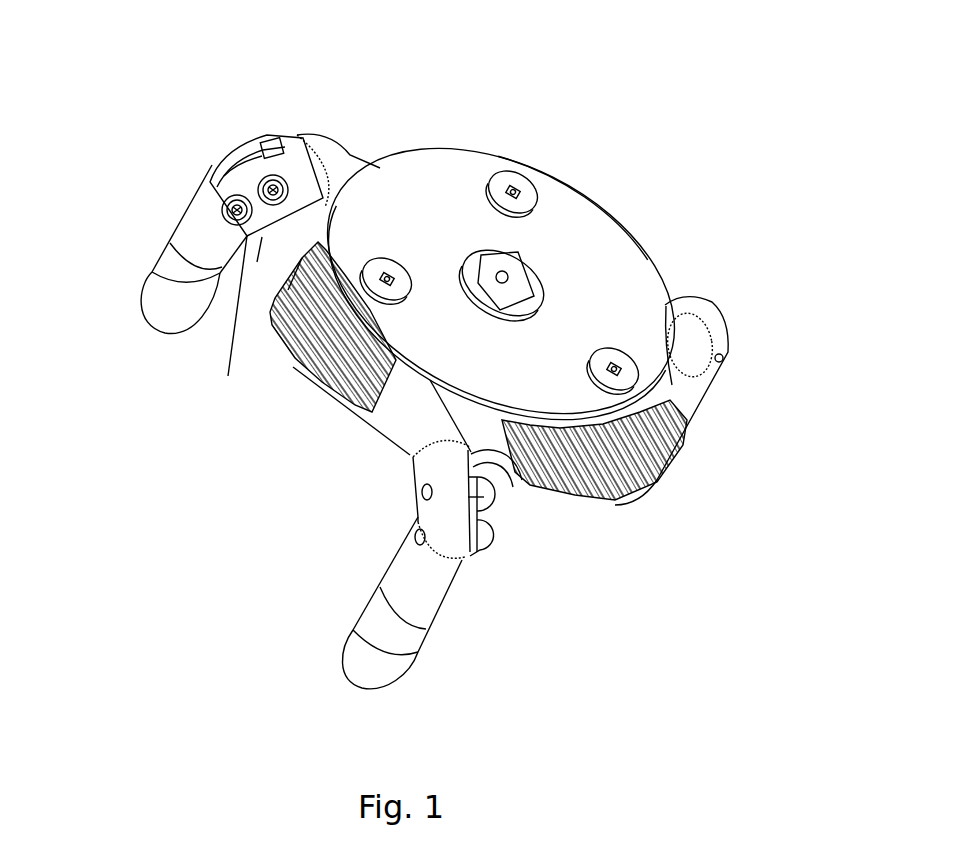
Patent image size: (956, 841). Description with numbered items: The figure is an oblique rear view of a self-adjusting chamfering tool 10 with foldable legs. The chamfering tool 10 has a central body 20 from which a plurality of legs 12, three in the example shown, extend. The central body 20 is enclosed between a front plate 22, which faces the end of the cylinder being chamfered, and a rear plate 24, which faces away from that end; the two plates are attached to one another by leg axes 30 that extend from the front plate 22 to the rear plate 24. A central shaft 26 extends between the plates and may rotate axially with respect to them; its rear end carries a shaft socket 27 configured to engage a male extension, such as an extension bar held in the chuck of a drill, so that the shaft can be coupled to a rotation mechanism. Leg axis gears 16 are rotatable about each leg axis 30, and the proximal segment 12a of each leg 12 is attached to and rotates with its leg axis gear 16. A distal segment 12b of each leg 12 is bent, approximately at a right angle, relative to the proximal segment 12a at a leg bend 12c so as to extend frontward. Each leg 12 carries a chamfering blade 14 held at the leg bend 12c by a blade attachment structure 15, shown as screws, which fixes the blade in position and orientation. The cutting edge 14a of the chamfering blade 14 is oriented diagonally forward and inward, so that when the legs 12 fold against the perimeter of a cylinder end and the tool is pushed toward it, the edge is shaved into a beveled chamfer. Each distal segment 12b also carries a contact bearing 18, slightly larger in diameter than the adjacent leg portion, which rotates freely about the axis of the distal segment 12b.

The chamfering tool 10 is at (707, 83).
The leg 12 is at (256, 103).
The proximal segment 12a is at (334, 146).
The distal segment 12b is at (188, 215).
The leg bend 12c is at (250, 143).
The chamfering blade 14 is at (245, 180).
The cutting edge 14a is at (228, 376).
The blade attachment structure 15 is at (288, 201).
The leg axis gear 16 is at (296, 366).
The contact bearing 18 is at (158, 265).
The central body 20 is at (555, 150).
The front plate 22 is at (362, 425).
The rear plate 24 is at (420, 158).
The central shaft 26 is at (543, 294).
The shaft socket 27 is at (513, 285).
The leg axis 30 is at (500, 195).